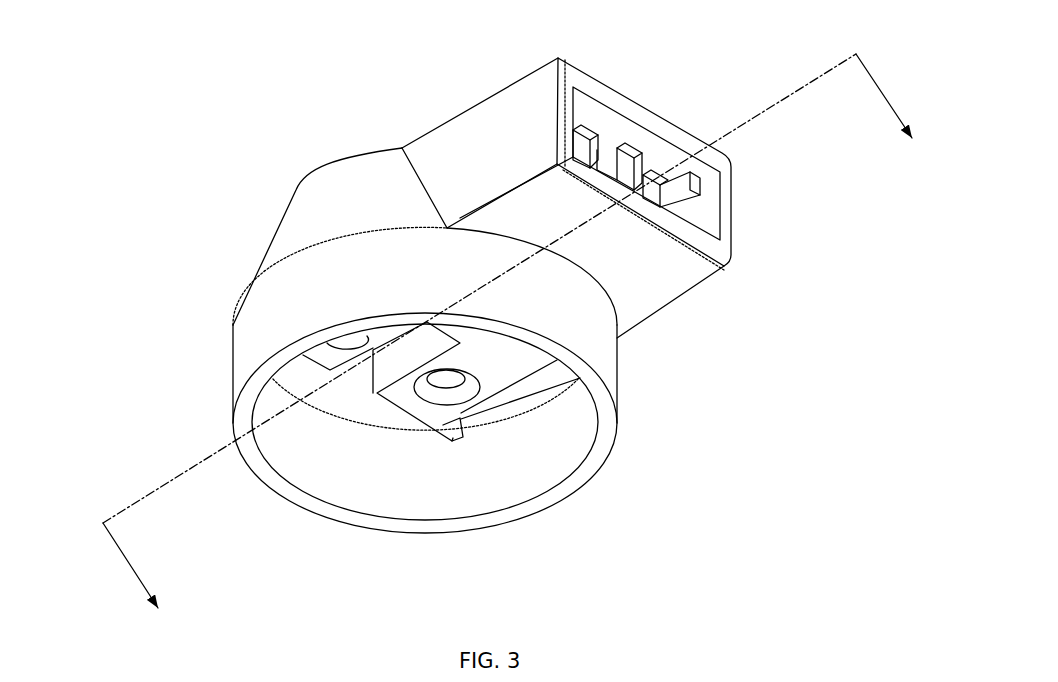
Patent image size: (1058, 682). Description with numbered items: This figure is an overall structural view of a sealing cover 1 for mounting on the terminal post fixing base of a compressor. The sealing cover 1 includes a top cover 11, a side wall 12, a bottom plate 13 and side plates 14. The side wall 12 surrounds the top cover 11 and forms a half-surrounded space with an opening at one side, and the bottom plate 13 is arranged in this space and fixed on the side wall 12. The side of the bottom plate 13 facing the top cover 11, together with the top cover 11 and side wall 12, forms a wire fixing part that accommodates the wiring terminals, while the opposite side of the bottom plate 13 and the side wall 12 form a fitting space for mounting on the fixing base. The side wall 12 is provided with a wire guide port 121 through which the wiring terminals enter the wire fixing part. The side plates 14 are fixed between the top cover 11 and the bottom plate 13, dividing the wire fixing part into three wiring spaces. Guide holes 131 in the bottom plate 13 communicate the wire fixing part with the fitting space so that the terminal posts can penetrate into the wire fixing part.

The sealing cover 1 is at (98, 118).
The top cover 11 is at (298, 176).
The side wall 12 is at (228, 363).
The bottom plate 13 is at (688, 292).
The side plates 14 is at (584, 150).
The wire guide port 121 is at (640, 117).
The guide holes 131 is at (483, 395).